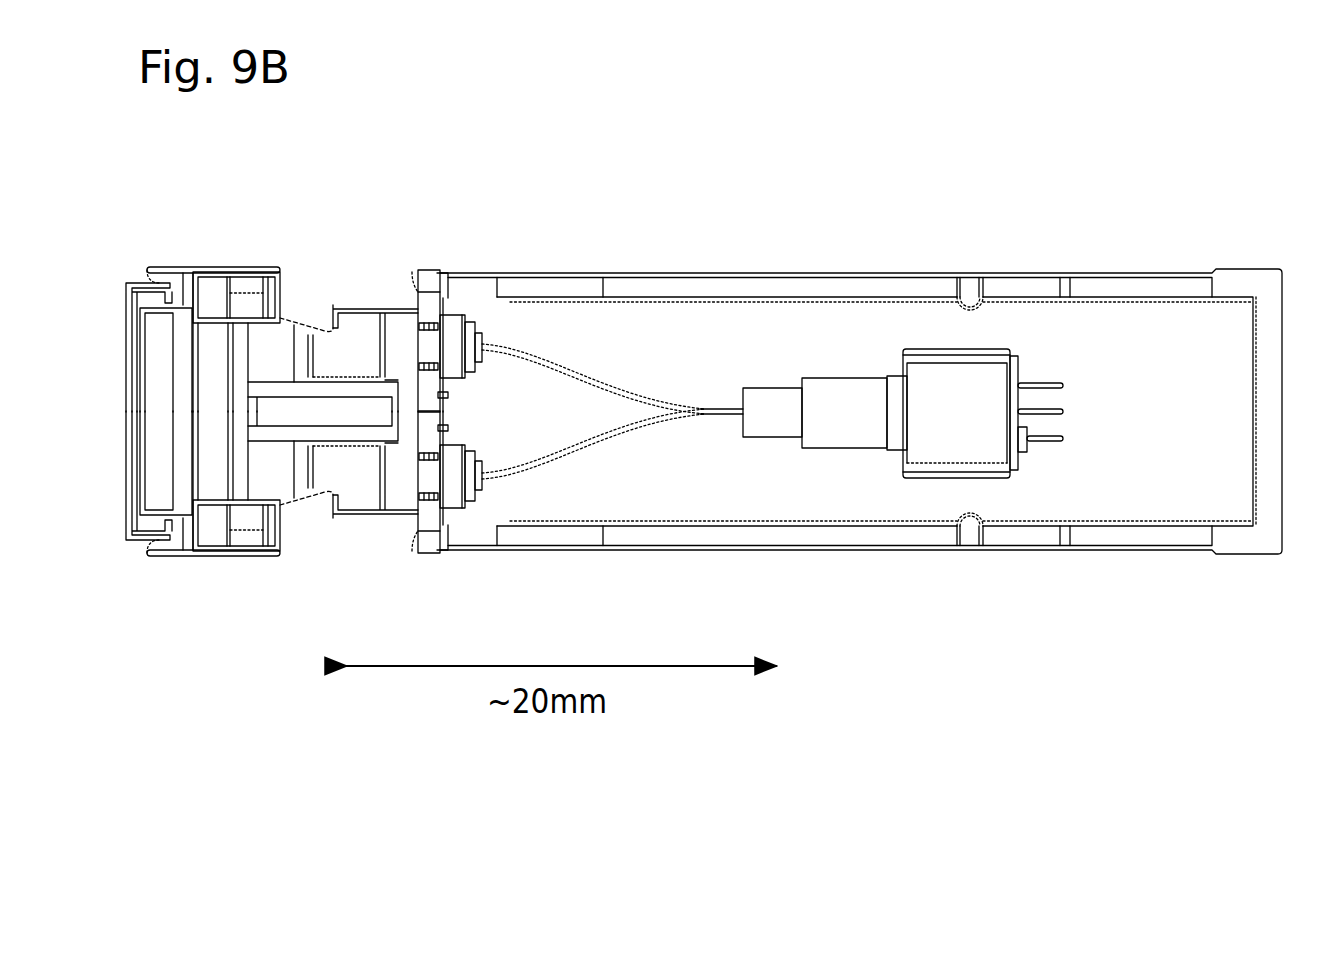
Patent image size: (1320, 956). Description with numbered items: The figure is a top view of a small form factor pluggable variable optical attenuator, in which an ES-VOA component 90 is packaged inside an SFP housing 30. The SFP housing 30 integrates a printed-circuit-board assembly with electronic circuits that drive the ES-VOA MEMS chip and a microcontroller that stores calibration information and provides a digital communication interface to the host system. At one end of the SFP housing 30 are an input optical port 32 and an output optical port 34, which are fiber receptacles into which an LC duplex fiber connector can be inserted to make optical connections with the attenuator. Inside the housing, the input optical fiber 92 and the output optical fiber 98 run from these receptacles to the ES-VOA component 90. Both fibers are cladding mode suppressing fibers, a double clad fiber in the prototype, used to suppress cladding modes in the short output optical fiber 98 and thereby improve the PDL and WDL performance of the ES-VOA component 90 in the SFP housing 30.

The SFP housing 30 is at (1123, 418).
The input optical port 32 is at (346, 328).
The output optical port 34 is at (346, 495).
The ES-VOA component 90 is at (923, 418).
The input optical fiber 92 is at (541, 358).
The output optical fiber 98 is at (538, 467).